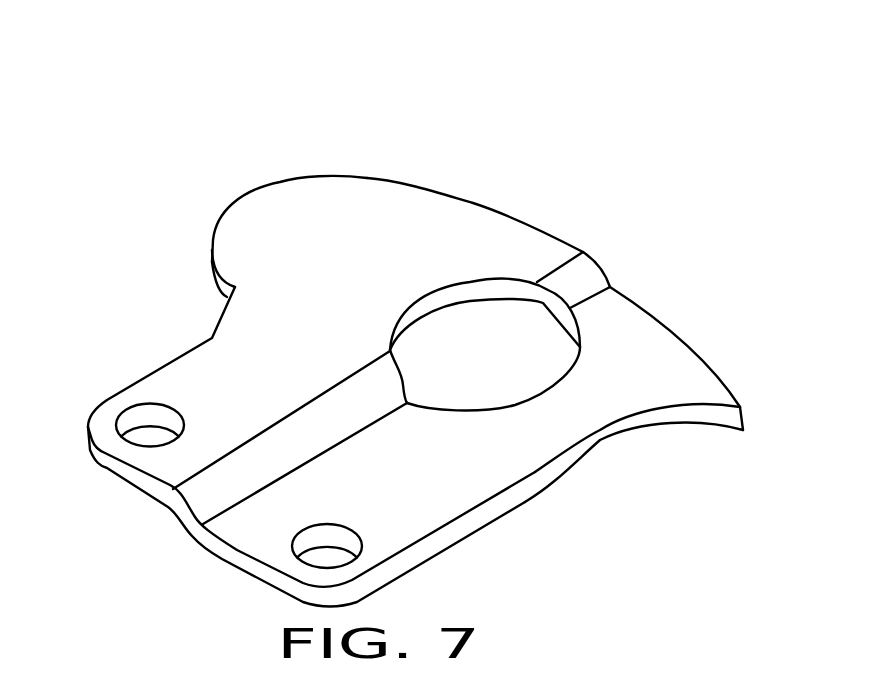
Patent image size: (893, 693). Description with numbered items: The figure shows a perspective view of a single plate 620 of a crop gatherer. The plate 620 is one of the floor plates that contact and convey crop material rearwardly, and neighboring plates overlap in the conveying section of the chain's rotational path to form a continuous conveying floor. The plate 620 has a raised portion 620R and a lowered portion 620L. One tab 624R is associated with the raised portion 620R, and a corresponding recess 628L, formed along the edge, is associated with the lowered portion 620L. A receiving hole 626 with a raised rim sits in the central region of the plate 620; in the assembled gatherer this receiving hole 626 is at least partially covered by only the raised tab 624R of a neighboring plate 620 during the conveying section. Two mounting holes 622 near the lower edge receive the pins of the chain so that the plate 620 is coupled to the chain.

The plate 620 is at (492, 182).
The raised portion 620R is at (341, 213).
The lowered portion 620L is at (680, 381).
The tab 624R is at (243, 215).
The receiving hole 626 is at (510, 290).
The mounting hole 622 is at (137, 422).
The recess 628L is at (677, 417).